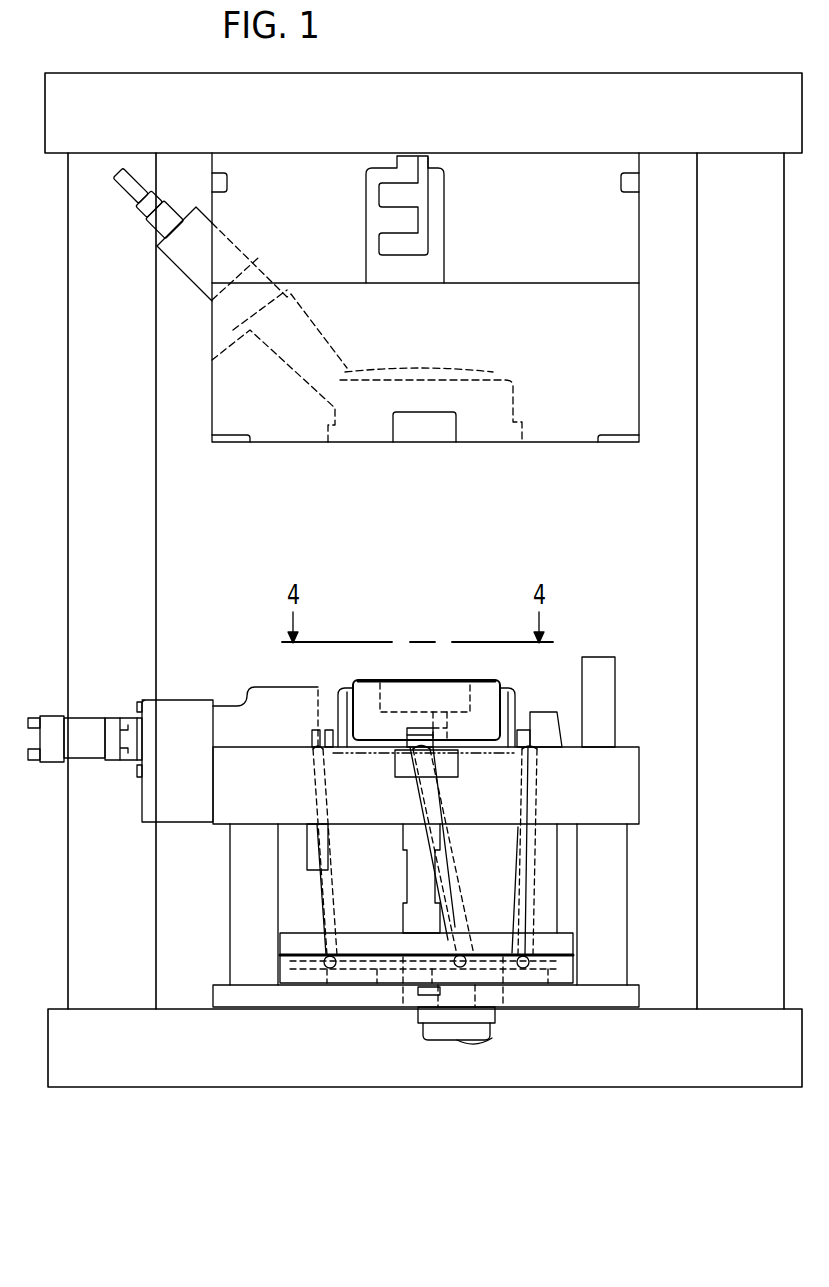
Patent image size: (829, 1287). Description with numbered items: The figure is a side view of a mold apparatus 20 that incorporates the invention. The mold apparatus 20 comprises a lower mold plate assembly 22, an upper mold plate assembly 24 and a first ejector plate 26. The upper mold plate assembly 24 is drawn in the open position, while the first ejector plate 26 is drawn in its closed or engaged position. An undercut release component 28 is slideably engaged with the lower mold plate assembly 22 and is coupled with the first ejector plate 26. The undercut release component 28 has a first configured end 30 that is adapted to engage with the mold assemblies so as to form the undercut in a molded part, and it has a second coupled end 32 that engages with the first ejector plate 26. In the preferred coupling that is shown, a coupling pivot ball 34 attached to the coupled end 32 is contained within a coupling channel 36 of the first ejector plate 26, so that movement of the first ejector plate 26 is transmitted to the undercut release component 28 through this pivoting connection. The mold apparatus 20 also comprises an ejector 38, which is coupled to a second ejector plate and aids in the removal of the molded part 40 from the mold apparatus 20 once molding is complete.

The mold apparatus 20 is at (38, 1045).
The lower mold plate assembly 22 is at (640, 786).
The upper mold plate assembly 24 is at (640, 422).
The first ejector plate 26 is at (578, 968).
The undercut release component 28 is at (318, 917).
The first configured end 30 is at (314, 740).
The second coupled end 32 is at (302, 962).
The coupling pivot ball 34 is at (330, 964).
The coupling channel 36 is at (406, 986).
The ejector 38 is at (408, 682).
The molded part 40 is at (510, 682).